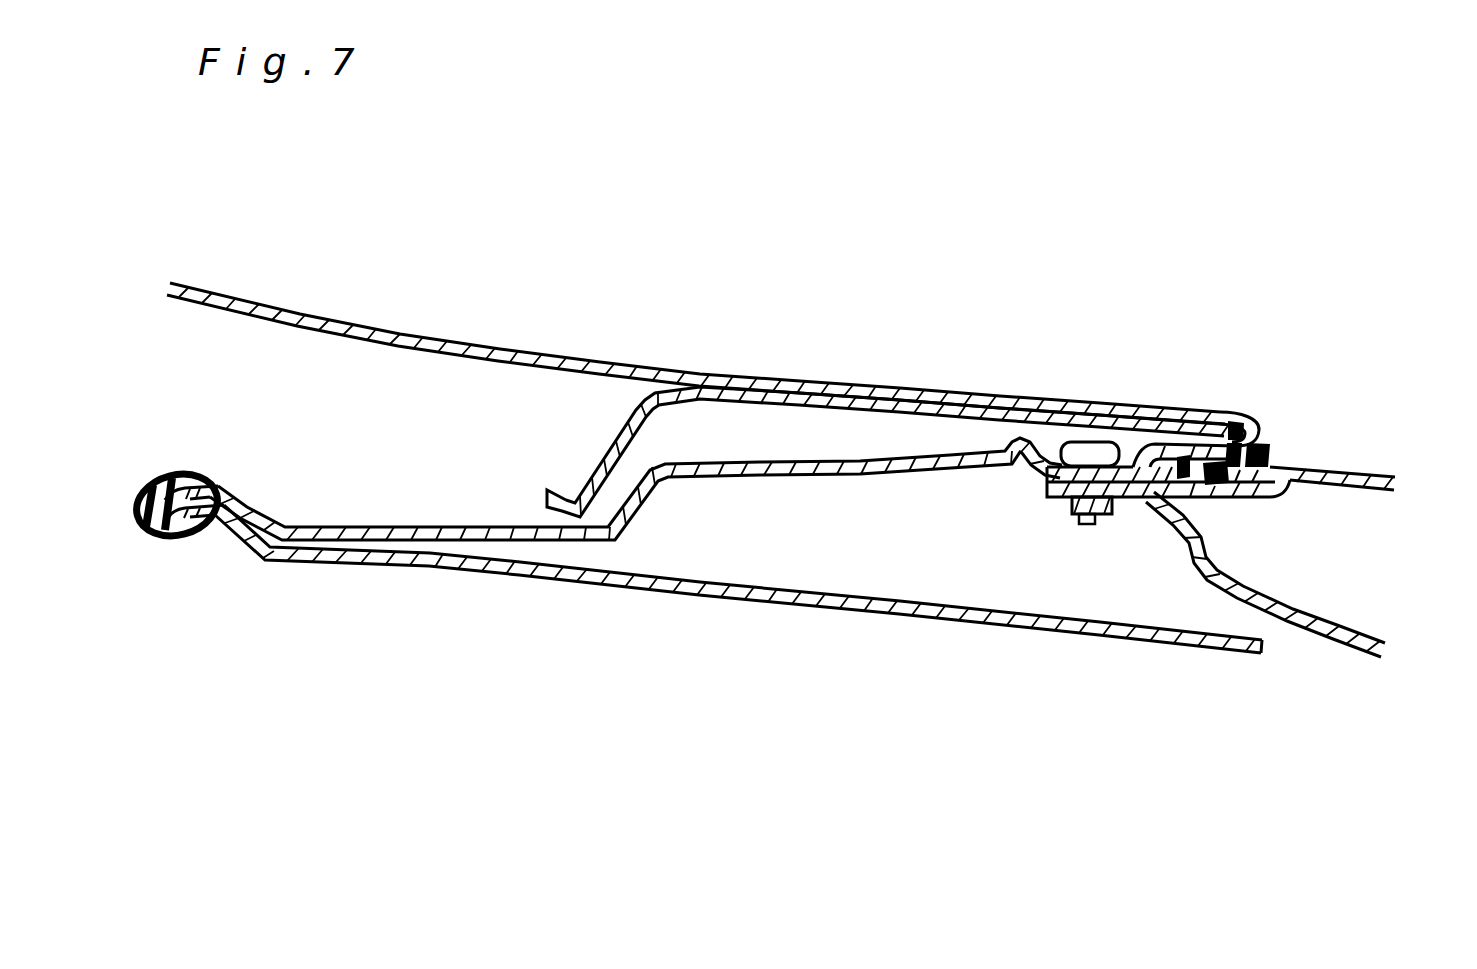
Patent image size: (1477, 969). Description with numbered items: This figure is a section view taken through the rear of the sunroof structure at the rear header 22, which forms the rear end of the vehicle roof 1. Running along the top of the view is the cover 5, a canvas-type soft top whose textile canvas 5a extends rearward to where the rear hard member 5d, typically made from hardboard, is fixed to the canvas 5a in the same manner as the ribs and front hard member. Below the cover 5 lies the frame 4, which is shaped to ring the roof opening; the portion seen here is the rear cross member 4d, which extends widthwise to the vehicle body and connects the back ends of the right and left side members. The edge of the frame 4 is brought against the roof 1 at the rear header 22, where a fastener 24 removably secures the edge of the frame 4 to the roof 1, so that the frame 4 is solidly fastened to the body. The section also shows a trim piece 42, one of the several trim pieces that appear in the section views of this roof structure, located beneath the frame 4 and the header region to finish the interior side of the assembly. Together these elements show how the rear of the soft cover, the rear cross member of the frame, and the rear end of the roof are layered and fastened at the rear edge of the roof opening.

The vehicle roof 1 is at (1366, 432).
The rear header 22 is at (1337, 466).
The frame 4 is at (757, 547).
The rear cross member 4d is at (773, 478).
The cover 5 is at (718, 374).
The canvas 5a is at (403, 329).
The rear hard member 5d is at (748, 390).
The fastener 24 is at (1070, 514).
The trim piece 42 is at (590, 583).